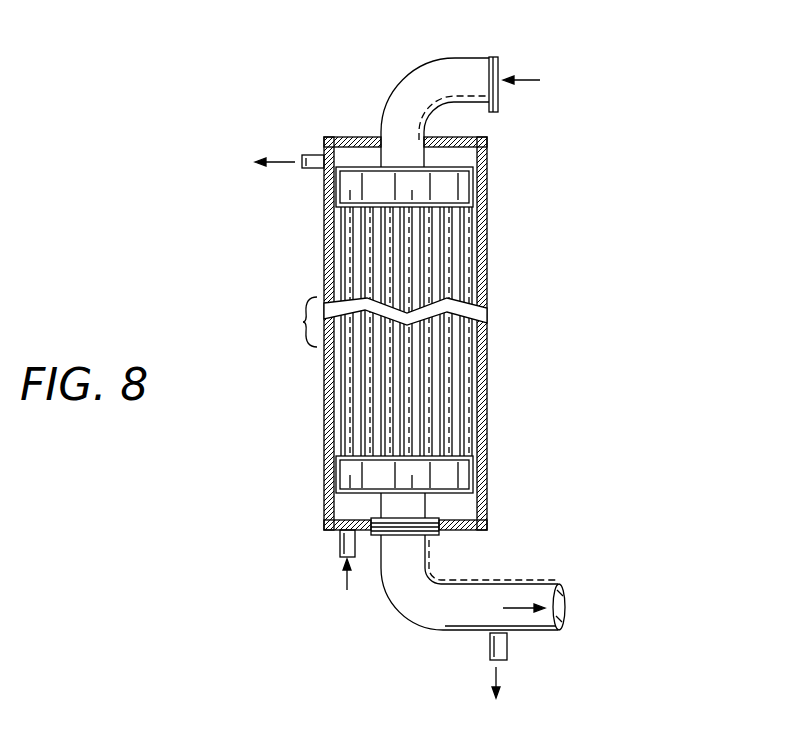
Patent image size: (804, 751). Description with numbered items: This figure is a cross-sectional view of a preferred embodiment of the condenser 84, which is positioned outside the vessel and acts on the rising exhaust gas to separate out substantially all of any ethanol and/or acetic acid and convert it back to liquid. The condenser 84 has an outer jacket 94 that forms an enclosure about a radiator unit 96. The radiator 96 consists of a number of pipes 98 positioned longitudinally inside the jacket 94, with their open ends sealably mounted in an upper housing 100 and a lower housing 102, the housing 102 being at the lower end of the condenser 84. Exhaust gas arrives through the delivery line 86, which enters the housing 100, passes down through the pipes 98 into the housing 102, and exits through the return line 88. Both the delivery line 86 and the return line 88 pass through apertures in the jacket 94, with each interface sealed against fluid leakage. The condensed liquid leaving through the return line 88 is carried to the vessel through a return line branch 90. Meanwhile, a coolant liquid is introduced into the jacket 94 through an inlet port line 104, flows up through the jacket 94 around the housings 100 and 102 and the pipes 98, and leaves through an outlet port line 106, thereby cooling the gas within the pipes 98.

The condenser 84 is at (518, 202).
The delivery line 86 is at (448, 80).
The return line 88 is at (438, 604).
The return line branch 90 is at (490, 650).
The outer jacket 94 is at (488, 272).
The radiator unit 96 is at (470, 410).
The pipes 98 is at (452, 360).
The housing 100 is at (450, 186).
The housing 102 is at (450, 475).
The inlet port line 104 is at (340, 545).
The outlet port line 106 is at (312, 170).